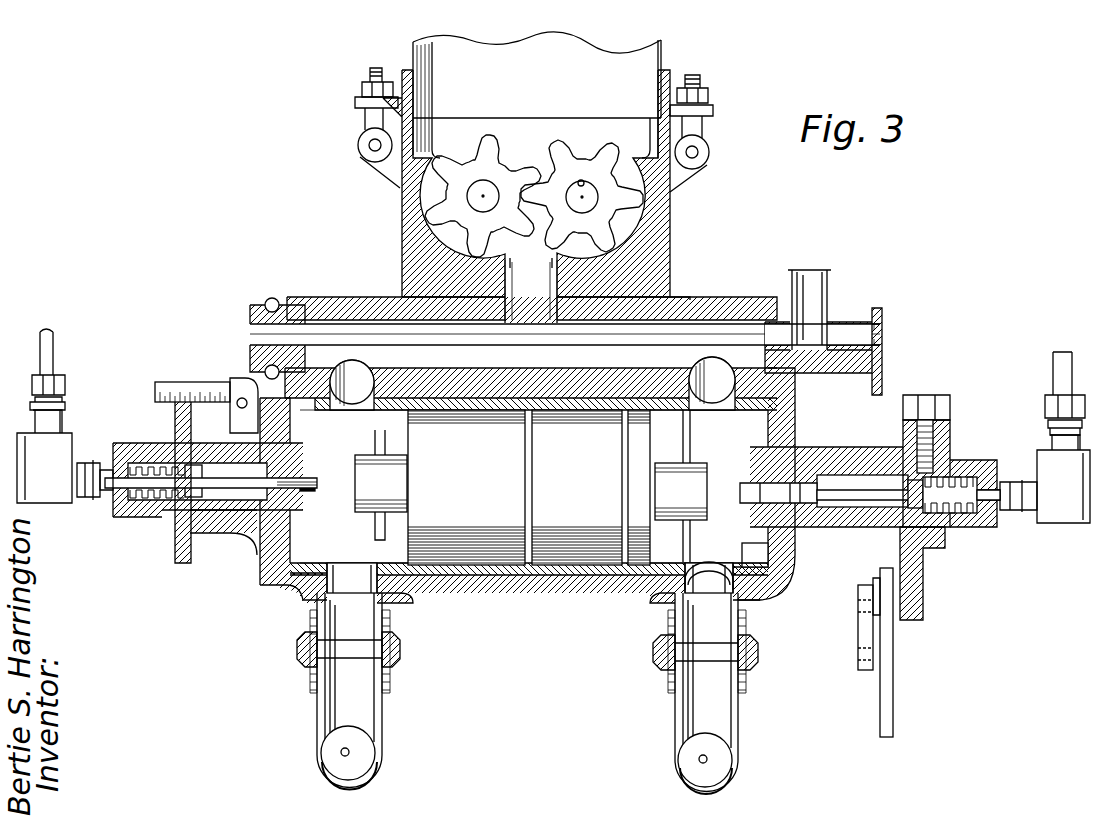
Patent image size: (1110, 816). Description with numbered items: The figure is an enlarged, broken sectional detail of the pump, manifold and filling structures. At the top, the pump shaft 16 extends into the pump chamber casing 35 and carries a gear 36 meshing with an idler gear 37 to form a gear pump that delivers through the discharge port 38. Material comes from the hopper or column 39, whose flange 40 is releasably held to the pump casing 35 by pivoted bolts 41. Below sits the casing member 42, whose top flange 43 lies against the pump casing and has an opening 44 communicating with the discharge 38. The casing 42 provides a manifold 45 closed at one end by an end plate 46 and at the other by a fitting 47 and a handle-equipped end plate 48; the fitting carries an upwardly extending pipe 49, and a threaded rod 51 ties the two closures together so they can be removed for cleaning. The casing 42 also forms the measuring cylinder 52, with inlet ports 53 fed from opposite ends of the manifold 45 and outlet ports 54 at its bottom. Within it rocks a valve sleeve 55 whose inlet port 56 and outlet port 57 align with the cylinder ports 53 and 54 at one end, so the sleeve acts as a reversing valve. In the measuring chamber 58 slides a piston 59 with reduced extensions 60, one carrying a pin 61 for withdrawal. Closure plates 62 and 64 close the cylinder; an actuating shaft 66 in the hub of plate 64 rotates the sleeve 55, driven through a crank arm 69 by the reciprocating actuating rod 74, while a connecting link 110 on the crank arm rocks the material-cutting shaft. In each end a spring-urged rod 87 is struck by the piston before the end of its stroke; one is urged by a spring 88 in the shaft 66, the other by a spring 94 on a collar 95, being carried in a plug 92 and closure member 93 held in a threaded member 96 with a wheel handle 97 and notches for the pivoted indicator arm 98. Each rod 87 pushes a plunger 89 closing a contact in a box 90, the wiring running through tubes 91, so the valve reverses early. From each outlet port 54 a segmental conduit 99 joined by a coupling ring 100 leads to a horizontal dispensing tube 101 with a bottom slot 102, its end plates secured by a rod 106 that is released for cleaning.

The pump shaft 16 is at (578, 191).
The pump chamber casing 35 is at (672, 220).
The gear 36 is at (592, 152).
The idler gear 37 is at (506, 146).
The discharge port 38 is at (536, 278).
The casing (hopper or column) 39 is at (663, 61).
The flange 40 is at (714, 112).
The pivoted bolts 41 is at (370, 74).
The casing member 42 is at (696, 302).
The top flange 43 is at (402, 298).
The opening 44 is at (531, 290).
The manifold 45 is at (705, 316).
The end plate 46 is at (252, 322).
The fitting 47 is at (808, 380).
The handle-equipped end plate 48 is at (876, 315).
The upwardly extending pipe 49 is at (828, 303).
The threaded rod 51 is at (512, 347).
The measuring cylinder 52 is at (592, 370).
The inlet ports 53 is at (373, 368).
The outlet ports 54 is at (386, 598).
The valve sleeve 55 is at (518, 585).
The inlet port 56 is at (354, 400).
The outlet port 57 is at (703, 568).
The measuring chamber 58 is at (322, 541).
The piston 59 is at (534, 487).
The reduced extensions 60 is at (365, 495).
The pin 61 is at (378, 526).
The closure plate 62 is at (262, 580).
The closure plate 64 is at (800, 412).
The actuating shaft 66 is at (842, 472).
The crank arm 69 is at (925, 575).
The actuating rod 74 is at (894, 680).
The spring-urged rod 87 is at (226, 512).
The spring 88 is at (968, 465).
The plunger 89 is at (104, 470).
The box 90 is at (62, 490).
The tubes 91 is at (55, 357).
The plug 92 is at (307, 478).
The closure member 93 is at (106, 498).
The spring 94 is at (146, 518).
The collar 95 is at (196, 468).
The threaded member 96 is at (172, 500).
The wheel handle 97 is at (176, 560).
The pivoted indicator arm 98 is at (205, 382).
The conduit 99 is at (316, 708).
The coupling ring 100 is at (402, 652).
The dispensing tube 101 is at (322, 765).
The elongated slot or aperture 102 is at (347, 783).
The rod 106 is at (350, 752).
The connecting link 110 is at (858, 634).